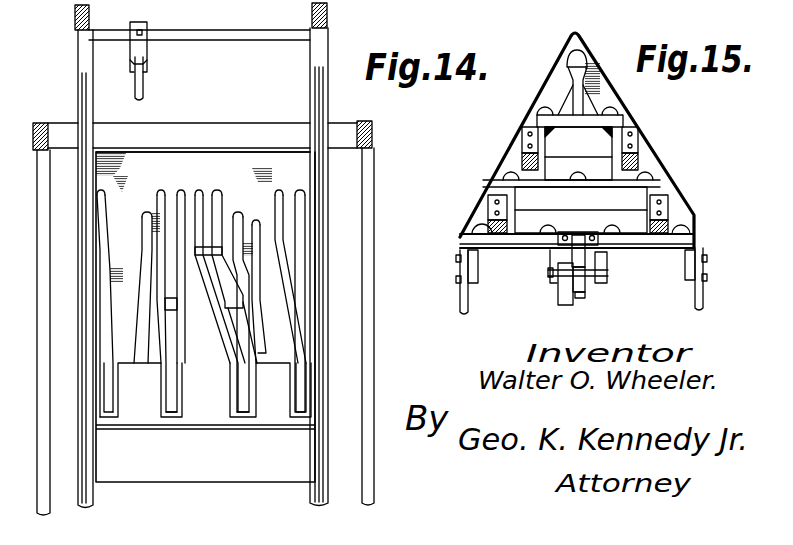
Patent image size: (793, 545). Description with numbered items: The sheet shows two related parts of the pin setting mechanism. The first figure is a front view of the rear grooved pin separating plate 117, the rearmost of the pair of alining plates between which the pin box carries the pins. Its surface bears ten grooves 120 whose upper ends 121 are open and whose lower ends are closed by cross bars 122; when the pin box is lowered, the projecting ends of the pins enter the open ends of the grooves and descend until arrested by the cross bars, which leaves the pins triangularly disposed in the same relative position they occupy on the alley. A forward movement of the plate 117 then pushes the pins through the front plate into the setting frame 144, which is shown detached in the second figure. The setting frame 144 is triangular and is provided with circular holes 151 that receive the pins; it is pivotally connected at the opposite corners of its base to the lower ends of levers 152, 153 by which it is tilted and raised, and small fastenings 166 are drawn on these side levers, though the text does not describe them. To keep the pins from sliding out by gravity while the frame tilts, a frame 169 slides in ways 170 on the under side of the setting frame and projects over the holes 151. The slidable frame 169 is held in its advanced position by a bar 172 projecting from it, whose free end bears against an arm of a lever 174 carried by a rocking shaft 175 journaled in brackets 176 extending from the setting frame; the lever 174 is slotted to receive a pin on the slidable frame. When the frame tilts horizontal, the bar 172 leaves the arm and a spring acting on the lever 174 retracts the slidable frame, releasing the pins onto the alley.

In FIG. 14, the rear grooved pin separating plate 117 is at (240, 163).
In FIG. 14, the grooves 120 is at (110, 326).
In FIG. 14, the upper ends of grooves 121 is at (247, 212).
In FIG. 14, the cross bars 122 is at (214, 318).
In FIG. 15, the setting frame 144 is at (645, 148).
In FIG. 15, the circular holes 151 is at (515, 170).
In FIG. 15, the lever 152 is at (462, 286).
In FIG. 15, the lever 153 is at (462, 253).
In FIG. 15, the lower bolt 166 is at (457, 278).
In FIG. 15, the slidable frame 169 is at (497, 180).
In FIG. 15, the ways 170 is at (528, 128).
In FIG. 15, the bar 172 is at (588, 250).
In FIG. 15, the lever 174 is at (582, 300).
In FIG. 15, the rocking shaft 175 is at (550, 272).
In FIG. 15, the brackets 176 is at (558, 292).